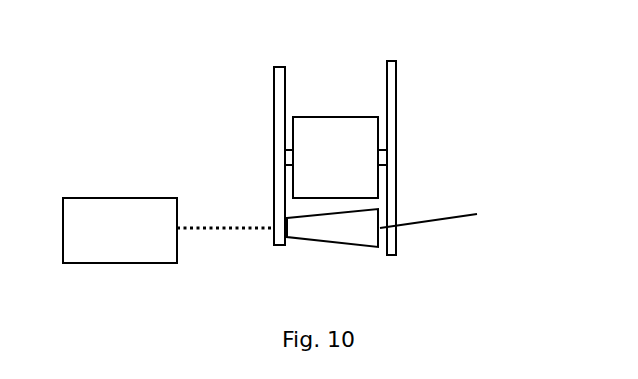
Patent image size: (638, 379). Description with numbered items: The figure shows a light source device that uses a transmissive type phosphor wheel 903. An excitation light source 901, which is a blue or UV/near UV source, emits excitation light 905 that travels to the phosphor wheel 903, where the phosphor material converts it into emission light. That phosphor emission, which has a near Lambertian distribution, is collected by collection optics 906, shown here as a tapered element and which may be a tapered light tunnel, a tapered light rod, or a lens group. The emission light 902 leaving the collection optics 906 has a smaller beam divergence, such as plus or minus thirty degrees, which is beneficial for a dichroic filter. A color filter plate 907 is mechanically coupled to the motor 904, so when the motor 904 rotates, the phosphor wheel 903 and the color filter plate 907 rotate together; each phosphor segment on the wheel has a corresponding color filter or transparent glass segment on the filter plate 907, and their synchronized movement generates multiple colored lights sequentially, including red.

The excitation light source 901 is at (78, 188).
The emission light 902 is at (463, 225).
The phosphor wheel 903 is at (260, 88).
The motor 904 is at (332, 107).
The excitation light 905 is at (222, 218).
The collection optics 906 is at (327, 247).
The color filter plate 907 is at (402, 64).